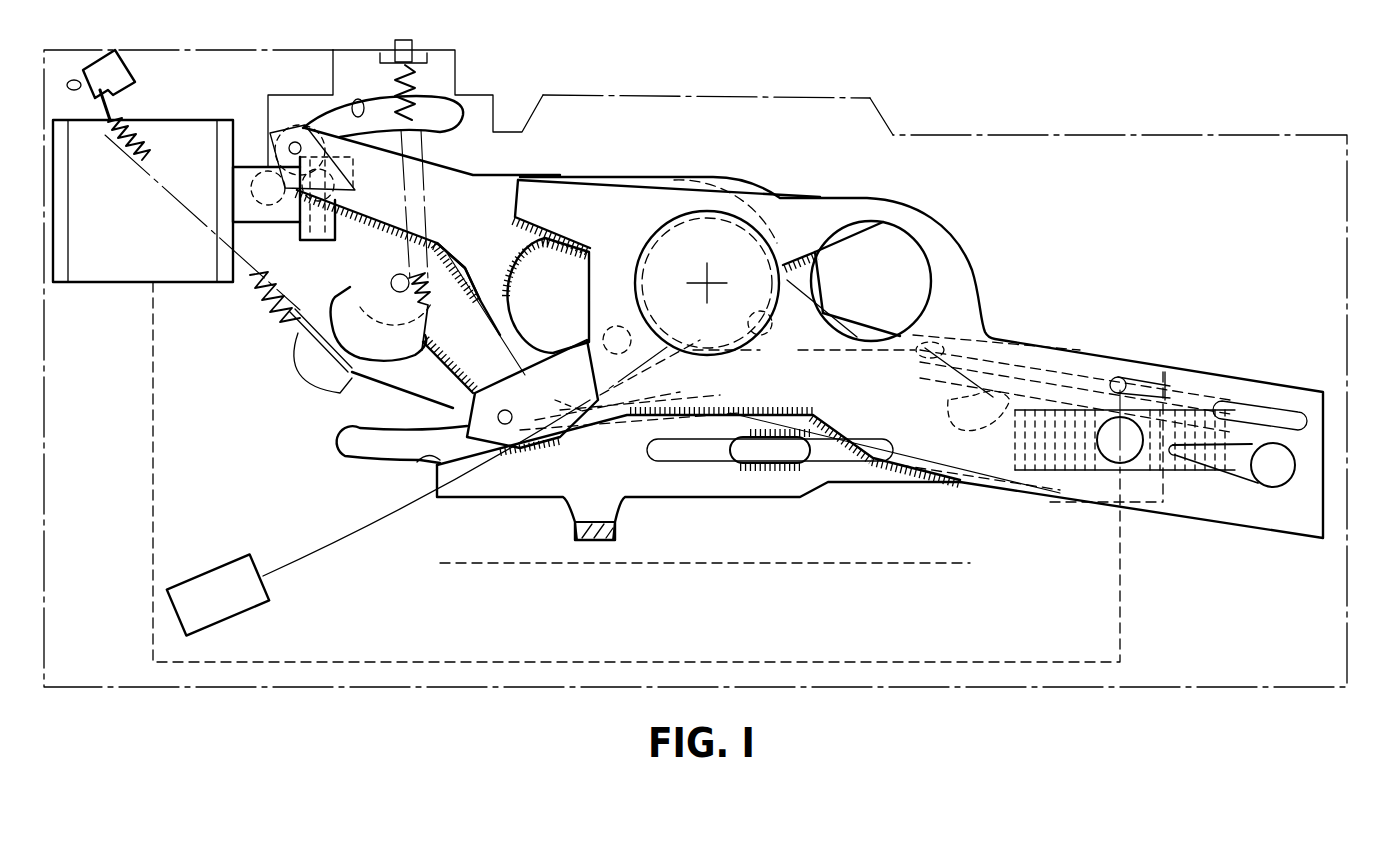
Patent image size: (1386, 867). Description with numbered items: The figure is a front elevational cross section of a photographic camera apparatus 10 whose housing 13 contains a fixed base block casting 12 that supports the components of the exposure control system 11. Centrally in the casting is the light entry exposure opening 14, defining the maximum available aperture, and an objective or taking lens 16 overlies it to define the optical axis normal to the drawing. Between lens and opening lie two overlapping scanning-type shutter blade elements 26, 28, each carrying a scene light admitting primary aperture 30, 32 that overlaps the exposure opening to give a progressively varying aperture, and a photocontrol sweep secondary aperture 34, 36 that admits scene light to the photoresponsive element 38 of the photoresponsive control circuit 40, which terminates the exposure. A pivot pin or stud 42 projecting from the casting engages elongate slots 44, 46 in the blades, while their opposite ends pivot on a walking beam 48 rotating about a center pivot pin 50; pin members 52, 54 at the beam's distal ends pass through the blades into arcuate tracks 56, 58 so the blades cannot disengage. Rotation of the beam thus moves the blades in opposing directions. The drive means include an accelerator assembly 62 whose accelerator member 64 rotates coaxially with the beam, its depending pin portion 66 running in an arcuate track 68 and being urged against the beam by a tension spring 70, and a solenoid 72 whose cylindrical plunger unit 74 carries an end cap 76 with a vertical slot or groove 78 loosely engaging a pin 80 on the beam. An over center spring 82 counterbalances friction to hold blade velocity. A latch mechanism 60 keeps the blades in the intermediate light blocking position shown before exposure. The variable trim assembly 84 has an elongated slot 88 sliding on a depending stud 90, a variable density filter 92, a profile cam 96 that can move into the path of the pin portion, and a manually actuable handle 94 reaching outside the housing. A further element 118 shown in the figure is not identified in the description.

The photographic camera apparatus 10 is at (1132, 78).
The exposure control system 11 is at (755, 178).
The base block casting 12 is at (1090, 213).
The housing 13 is at (968, 134).
The light entry exposure opening 14 is at (722, 266).
The objective or taking lens 16 is at (650, 367).
The shutter blade element 26 is at (452, 175).
The shutter blade element 28 is at (848, 198).
The scene light admitting primary aperture 30 is at (518, 270).
The scene light admitting primary aperture 32 is at (912, 240).
The photocontrol sweep secondary aperture 34 is at (965, 432).
The photocontrol sweep secondary aperture 36 is at (1235, 445).
The photoresponsive element 38 is at (1135, 465).
The photoresponsive control circuit 40 is at (1125, 441).
The pivot pin or stud 42 is at (1125, 380).
The elongate slot 44 is at (945, 378).
The elongate slot 46 is at (1240, 408).
The walking beam 48 is at (478, 290).
The pivot pin or stud 50 is at (390, 286).
The pin member 52 is at (290, 140).
The pin member 54 is at (490, 452).
The arcuate slot or track 56 is at (357, 100).
The arcuate slot or track 58 is at (365, 455).
The latch mechanism 60 is at (248, 615).
The accelerator assembly 62 is at (285, 345).
The accelerator member 64 is at (406, 395).
The depending pin portion 66 is at (630, 407).
The arcuate track 68 is at (612, 332).
The tension spring 70 is at (122, 150).
The solenoid 72 is at (160, 118).
The cylindrical plunger unit 74 is at (232, 167).
The end cap 76 is at (300, 235).
The vertical slot or groove 78 is at (322, 235).
The pin 80 is at (278, 205).
The over center spring 82 is at (415, 102).
The variable trim assembly 84 is at (818, 490).
The elongated slot 88 is at (695, 460).
The depending stud 90 is at (782, 466).
The variable density filter 92 is at (1115, 470).
The manually actuable handle 94 is at (618, 532).
The profile cam 96 is at (436, 452).
The base line 118 is at (790, 562).